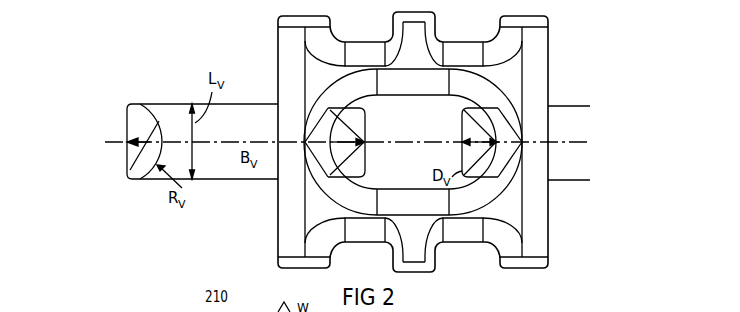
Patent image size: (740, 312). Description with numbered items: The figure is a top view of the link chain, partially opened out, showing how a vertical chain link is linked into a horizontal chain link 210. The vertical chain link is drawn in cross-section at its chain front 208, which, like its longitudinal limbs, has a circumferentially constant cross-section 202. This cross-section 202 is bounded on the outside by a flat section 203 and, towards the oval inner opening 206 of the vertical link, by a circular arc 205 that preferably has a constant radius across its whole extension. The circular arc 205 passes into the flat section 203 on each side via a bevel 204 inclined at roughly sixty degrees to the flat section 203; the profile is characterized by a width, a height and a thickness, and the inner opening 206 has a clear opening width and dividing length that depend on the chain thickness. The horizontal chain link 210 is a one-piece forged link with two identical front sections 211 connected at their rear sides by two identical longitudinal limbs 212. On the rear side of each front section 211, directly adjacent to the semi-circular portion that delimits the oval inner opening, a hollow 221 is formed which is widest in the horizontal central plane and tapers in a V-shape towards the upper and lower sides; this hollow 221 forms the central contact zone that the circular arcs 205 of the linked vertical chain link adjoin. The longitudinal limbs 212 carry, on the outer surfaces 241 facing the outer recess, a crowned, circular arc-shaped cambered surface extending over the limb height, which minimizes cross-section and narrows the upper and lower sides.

The cross-section 202 is at (462, 133).
The flat section 203 is at (125, 125).
The bevel 204 is at (131, 102).
The circular arc 205 is at (157, 122).
The inner opening 206 is at (260, 131).
The chain front 208 is at (462, 156).
The horizontal chain link 210 is at (564, 37).
The front section 211 is at (540, 71).
The longitudinal limb 212 is at (458, 68).
The hollow 221 is at (507, 137).
The outer surface 241 is at (363, 48).